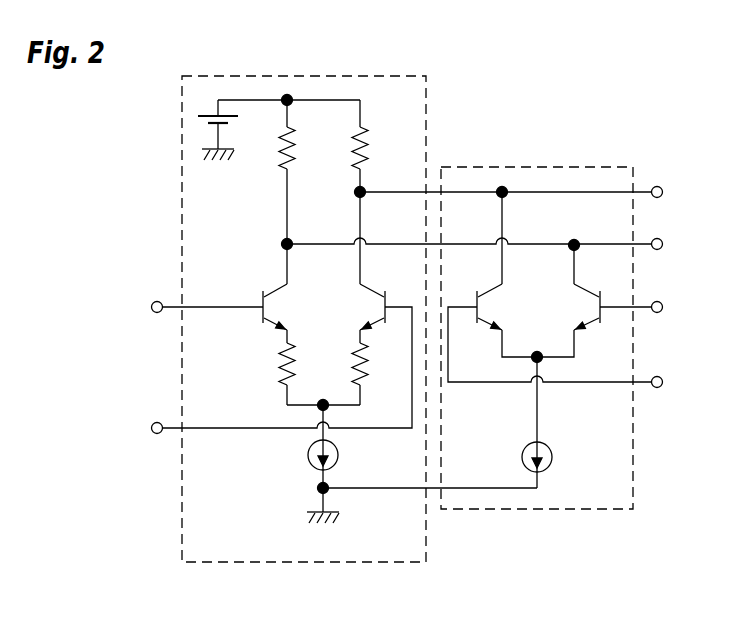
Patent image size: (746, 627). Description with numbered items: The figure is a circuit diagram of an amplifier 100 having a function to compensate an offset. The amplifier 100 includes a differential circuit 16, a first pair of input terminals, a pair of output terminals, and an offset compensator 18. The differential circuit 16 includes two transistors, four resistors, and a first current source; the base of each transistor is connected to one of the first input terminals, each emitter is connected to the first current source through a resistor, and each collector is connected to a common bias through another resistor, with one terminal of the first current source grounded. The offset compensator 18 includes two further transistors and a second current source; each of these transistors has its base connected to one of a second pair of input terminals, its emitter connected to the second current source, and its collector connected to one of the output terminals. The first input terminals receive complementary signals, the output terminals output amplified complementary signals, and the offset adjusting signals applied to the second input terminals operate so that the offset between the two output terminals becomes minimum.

The amplifier 100 is at (578, 92).
The differential circuit 16 is at (225, 76).
The offset compensator 18 is at (487, 167).